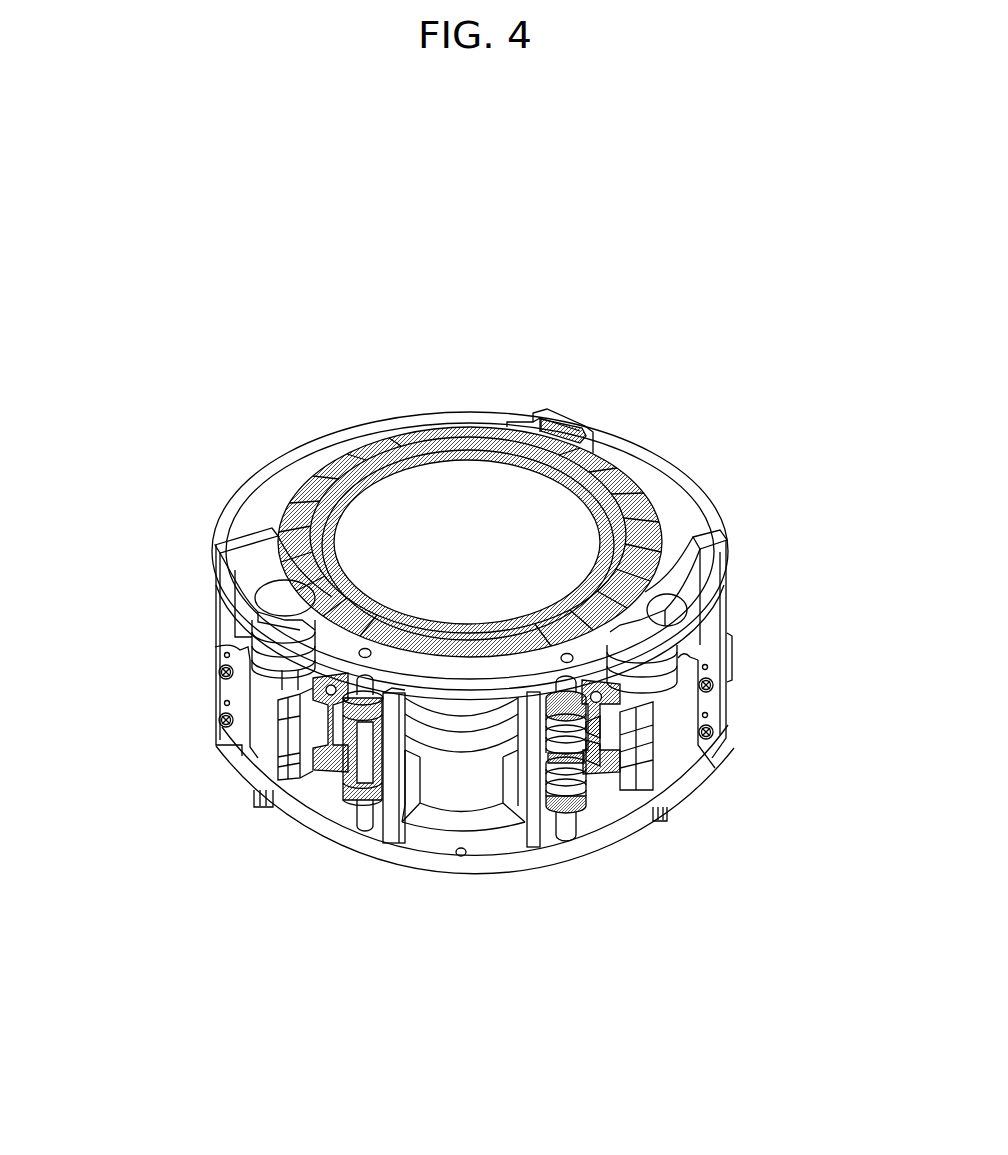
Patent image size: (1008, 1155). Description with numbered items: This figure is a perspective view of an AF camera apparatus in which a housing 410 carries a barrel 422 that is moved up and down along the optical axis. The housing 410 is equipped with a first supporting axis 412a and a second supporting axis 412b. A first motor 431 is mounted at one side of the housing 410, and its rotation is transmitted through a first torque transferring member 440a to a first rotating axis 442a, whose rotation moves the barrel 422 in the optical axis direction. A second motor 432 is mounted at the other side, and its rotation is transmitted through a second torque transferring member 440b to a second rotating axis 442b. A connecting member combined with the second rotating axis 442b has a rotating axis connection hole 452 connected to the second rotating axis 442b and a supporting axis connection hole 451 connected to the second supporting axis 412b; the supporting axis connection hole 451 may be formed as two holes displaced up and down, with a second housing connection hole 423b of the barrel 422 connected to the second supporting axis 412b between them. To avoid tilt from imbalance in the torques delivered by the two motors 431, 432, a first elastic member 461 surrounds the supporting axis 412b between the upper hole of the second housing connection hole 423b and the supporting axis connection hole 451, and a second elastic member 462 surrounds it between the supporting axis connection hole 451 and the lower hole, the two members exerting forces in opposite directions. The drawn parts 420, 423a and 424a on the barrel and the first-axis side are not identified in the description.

The housing 410 is at (647, 482).
The lens unit 420 is at (471, 488).
The barrel 422 is at (337, 491).
The first motor 431 is at (250, 730).
The second motor 432 is at (708, 700).
The first torque transferring member 440a is at (300, 724).
The second torque transferring member 440b is at (700, 718).
The first supporting axis 412a is at (360, 830).
The second supporting axis 412b is at (566, 822).
The first rotating axis 442a is at (333, 718).
The second rotating axis 442b is at (605, 708).
The first nut 423a is at (314, 770).
The second housing connection hole 423b is at (558, 770).
The first link 424a is at (305, 765).
The supporting axis connection hole 451 is at (605, 740).
The rotating axis connection hole 452 is at (618, 703).
The first elastic member 461 is at (590, 728).
The second elastic member 462 is at (570, 782).